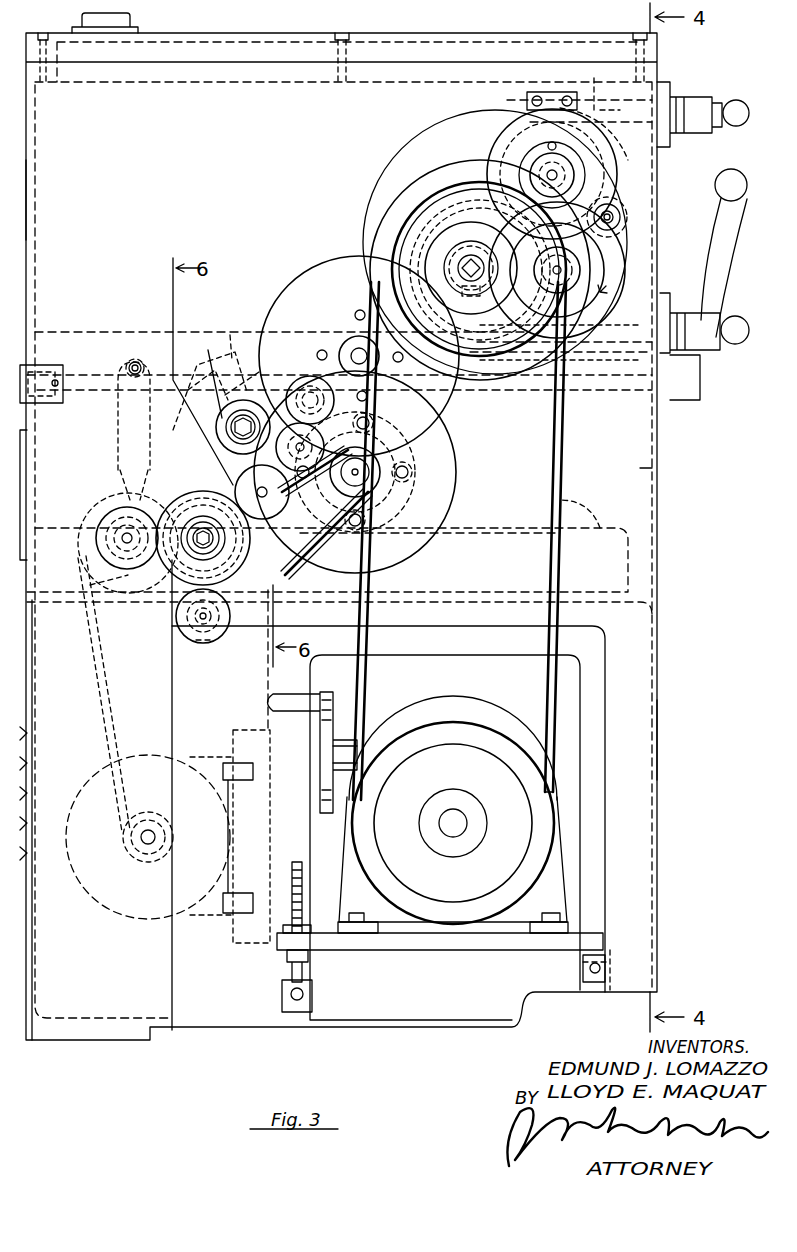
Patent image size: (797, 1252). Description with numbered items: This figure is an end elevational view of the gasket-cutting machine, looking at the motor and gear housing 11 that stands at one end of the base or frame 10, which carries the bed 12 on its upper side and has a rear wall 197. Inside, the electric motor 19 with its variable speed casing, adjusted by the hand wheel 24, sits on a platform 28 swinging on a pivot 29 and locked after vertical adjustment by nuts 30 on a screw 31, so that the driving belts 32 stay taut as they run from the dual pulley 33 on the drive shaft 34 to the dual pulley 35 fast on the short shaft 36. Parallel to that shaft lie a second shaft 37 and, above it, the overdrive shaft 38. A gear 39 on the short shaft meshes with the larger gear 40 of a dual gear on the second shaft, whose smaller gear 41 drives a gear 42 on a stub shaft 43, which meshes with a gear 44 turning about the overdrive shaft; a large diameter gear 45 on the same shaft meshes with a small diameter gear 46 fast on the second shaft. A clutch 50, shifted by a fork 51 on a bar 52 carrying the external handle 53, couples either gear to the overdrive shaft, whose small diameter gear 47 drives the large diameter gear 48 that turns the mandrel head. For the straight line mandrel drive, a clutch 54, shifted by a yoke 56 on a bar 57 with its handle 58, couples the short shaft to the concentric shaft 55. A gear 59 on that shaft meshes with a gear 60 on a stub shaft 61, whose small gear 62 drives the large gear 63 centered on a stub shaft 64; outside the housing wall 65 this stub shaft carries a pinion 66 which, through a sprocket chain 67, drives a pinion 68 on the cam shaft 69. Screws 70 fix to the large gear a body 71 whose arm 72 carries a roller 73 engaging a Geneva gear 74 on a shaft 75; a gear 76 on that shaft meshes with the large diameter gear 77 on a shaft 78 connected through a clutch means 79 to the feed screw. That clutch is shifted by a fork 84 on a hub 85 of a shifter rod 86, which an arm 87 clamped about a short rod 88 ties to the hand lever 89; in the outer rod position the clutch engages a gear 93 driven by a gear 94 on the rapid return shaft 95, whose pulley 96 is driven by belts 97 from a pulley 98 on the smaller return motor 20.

The base or frame 10 is at (668, 738).
The motor and gear housing 11 is at (22, 190).
The bed 12 is at (646, 505).
The electric motor 19 is at (464, 694).
The second electric motor 20 is at (125, 916).
The hand wheel 24 is at (347, 800).
The platform 28 is at (442, 950).
The pivot 29 is at (596, 976).
The nuts 30 is at (286, 955).
The screw 31 is at (297, 860).
The driving belts 32 is at (554, 718).
The dual pulley 33 is at (546, 829).
The drive shaft 34 is at (463, 820).
The dual pulley 35 is at (397, 197).
The short shaft 36 is at (462, 244).
The second shaft 37 is at (628, 256).
The overdrive shaft 38 is at (508, 138).
The gear 39 is at (395, 205).
The larger gear 40 is at (606, 270).
The gear 41 is at (610, 288).
The gear 42 is at (622, 215).
The stub shaft 43 is at (616, 210).
The gear 44 is at (632, 180).
The large diameter gear 45 is at (522, 126).
The small diameter gear 46 is at (602, 291).
The small diameter gear 47 is at (600, 165).
The large diameter gear 48 is at (410, 178).
The clutch 50 is at (485, 157).
The fork 51 is at (492, 118).
The bar 52 is at (604, 84).
The handle or manual 53 is at (737, 100).
The clutch 54 is at (468, 218).
The shaft 55 is at (480, 231).
The yoke 56 is at (424, 290).
The bar 57 is at (617, 342).
The handle or manual 58 is at (734, 318).
The gear 59 is at (390, 222).
The gear 60 is at (317, 272).
The stub shaft 61 is at (341, 325).
The small gear 62 is at (346, 300).
The large gear 63 is at (456, 468).
The stub shaft 64 is at (370, 480).
The wall 65 is at (637, 468).
The pinion 66 is at (380, 488).
The sprocket chain 67 is at (374, 508).
The pinion 68 is at (222, 642).
The cam shaft 69 is at (203, 648).
The screws 70 is at (378, 426).
The body 71 is at (454, 453).
The arm 72 is at (329, 403).
The roller 73 is at (311, 446).
The Geneva gear 74 is at (243, 345).
The shaft 75 is at (223, 350).
The gear 76 is at (215, 366).
The large diameter gear 77 is at (181, 438).
The shaft 78 is at (230, 570).
The clutch means 79 is at (163, 620).
The fork 84 is at (96, 520).
The hub 85 is at (112, 498).
The shifter rod 86 is at (88, 500).
The arm or member 87 is at (121, 438).
The short rod or bar 88 is at (87, 386).
The hand lever or manual 89 is at (716, 254).
The gear 93 is at (280, 570).
The gear 94 is at (90, 538).
The rapid traverse or return shaft 95 is at (92, 553).
The pulley 96 is at (88, 582).
The belts 97 is at (101, 684).
The pulley 98 is at (141, 856).
The rear wall 197 is at (268, 730).